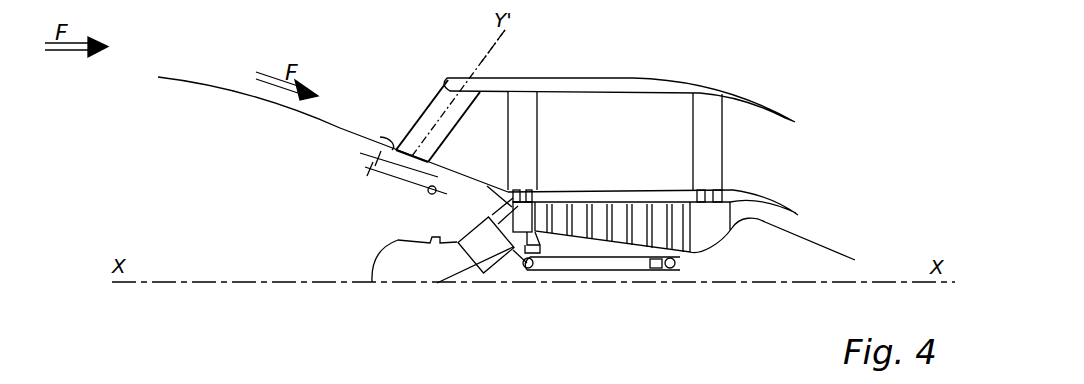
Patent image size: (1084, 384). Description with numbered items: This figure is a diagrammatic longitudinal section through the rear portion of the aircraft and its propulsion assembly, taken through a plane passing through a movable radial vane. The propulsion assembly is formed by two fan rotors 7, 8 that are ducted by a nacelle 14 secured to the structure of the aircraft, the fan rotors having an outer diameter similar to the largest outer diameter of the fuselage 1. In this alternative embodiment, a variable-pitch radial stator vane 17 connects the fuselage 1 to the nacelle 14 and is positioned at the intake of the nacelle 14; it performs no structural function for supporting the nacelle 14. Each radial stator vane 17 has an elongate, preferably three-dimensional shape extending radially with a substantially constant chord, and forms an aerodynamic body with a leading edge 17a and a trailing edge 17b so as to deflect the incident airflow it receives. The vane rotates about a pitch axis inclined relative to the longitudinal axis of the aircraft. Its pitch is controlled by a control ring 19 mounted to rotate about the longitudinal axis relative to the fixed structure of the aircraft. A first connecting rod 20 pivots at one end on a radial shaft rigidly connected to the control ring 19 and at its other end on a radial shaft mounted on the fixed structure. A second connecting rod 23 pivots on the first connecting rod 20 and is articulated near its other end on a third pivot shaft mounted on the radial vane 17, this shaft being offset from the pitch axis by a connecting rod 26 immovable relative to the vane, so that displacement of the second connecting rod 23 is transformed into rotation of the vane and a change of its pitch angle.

The fuselage 1 is at (201, 82).
The fan rotor 7 is at (522, 108).
The fan rotor 8 is at (708, 143).
The nacelle 14 is at (633, 78).
The radial stator vane 17 is at (418, 92).
The leading edge 17a is at (400, 142).
The trailing edge 17b is at (440, 145).
The control ring 19 is at (430, 193).
The first connecting rod 20 is at (400, 178).
The second connecting rod 23 is at (373, 167).
The connecting rod 26 is at (392, 149).